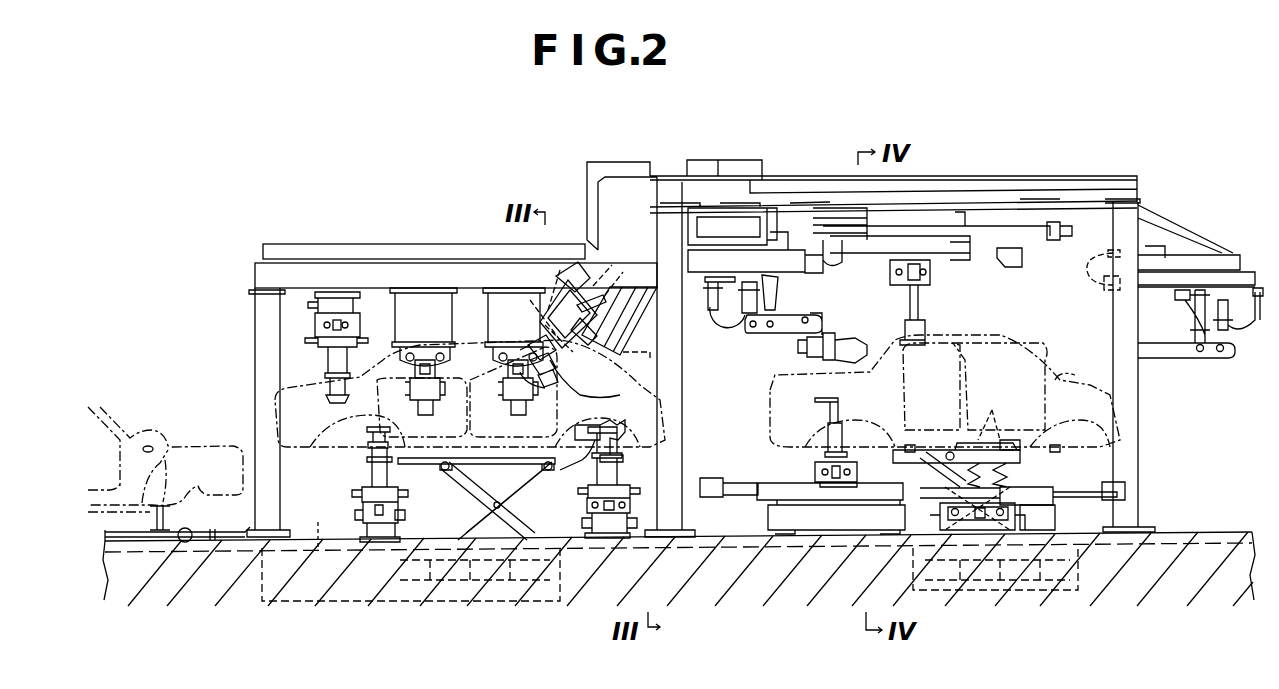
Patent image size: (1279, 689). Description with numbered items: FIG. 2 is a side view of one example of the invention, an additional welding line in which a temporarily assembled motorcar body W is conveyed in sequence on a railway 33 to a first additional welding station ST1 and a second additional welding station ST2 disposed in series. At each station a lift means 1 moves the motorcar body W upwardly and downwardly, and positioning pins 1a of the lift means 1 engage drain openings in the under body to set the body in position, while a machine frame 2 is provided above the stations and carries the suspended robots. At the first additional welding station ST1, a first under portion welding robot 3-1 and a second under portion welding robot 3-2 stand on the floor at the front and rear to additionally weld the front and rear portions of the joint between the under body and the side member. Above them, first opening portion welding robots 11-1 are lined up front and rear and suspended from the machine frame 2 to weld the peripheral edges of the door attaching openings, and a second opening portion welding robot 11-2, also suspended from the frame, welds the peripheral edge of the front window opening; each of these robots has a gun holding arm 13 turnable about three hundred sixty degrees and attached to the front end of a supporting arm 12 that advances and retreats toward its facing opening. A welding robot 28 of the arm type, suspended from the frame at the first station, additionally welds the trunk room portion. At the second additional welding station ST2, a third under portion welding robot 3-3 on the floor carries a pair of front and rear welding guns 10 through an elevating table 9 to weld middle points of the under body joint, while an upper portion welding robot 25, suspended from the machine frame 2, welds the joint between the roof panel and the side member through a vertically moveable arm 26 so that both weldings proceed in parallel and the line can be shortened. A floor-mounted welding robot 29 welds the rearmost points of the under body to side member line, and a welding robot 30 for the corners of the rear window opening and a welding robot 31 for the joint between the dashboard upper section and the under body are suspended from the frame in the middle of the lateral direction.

The lift means 1 is at (462, 518).
The positioning pins 1a is at (418, 468).
The machine frame 2 is at (313, 278).
The first under portion welding robot 3-1 is at (669, 470).
The second under portion welding robot 3-2 is at (355, 473).
The third under portion welding robot 3-3 is at (1036, 514).
The elevating table 9 is at (1035, 462).
The welding guns 10 is at (1017, 448).
The first opening portion welding robots 11-1 is at (400, 303).
The second opening portion welding robot 11-2 is at (603, 362).
The supporting arm 12 is at (592, 300).
The gun holding arm 13 is at (556, 360).
The upper portion welding robot 25 is at (955, 274).
The arm 26 is at (905, 325).
The welding robot 28 is at (306, 353).
The welding robot 29 is at (804, 461).
The welding robot 30 is at (775, 346).
The welding robot 31 is at (1209, 368).
The railway 33 is at (319, 523).
The motorcar body W is at (385, 350).
The first additional welding station ST1 is at (384, 228).
The second additional welding station ST2 is at (949, 159).